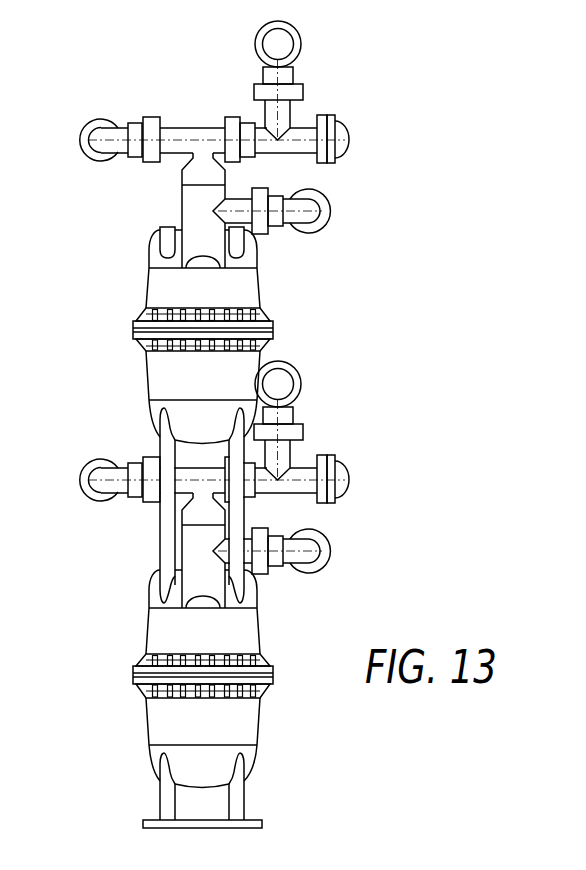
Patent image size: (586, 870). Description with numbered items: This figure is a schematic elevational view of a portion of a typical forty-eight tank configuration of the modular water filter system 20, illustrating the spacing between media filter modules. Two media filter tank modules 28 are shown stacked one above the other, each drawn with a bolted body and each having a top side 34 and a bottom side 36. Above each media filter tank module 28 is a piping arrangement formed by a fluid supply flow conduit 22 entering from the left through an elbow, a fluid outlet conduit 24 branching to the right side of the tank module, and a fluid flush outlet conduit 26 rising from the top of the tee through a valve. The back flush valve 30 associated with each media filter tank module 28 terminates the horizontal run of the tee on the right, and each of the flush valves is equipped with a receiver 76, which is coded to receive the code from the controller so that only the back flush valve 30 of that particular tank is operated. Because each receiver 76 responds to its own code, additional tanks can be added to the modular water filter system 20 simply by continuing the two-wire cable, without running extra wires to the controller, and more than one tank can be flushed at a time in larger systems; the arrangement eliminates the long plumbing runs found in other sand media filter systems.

The modular water filter system 20 is at (266, 416).
The fluid supply flow conduit 22 is at (99, 161).
The fluid outlet conduit 24 is at (332, 208).
The fluid flush outlet conduit 26 is at (298, 27).
The media filter tank module 28 is at (147, 286).
The back flush valve 30 is at (345, 142).
The top side 34 is at (150, 252).
The bottom side 36 is at (152, 421).
The receiver 76 is at (374, 108).